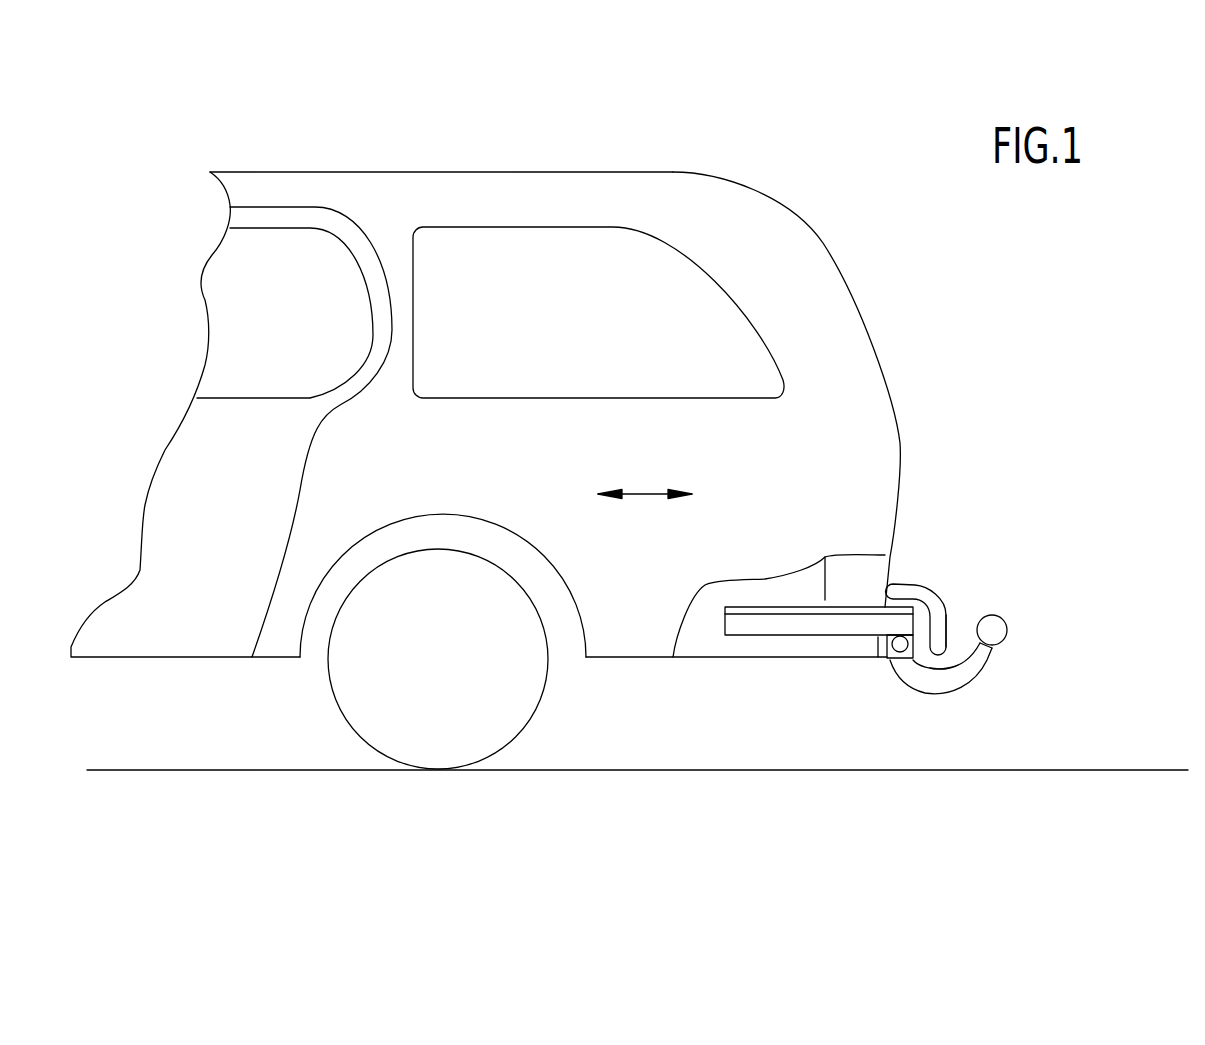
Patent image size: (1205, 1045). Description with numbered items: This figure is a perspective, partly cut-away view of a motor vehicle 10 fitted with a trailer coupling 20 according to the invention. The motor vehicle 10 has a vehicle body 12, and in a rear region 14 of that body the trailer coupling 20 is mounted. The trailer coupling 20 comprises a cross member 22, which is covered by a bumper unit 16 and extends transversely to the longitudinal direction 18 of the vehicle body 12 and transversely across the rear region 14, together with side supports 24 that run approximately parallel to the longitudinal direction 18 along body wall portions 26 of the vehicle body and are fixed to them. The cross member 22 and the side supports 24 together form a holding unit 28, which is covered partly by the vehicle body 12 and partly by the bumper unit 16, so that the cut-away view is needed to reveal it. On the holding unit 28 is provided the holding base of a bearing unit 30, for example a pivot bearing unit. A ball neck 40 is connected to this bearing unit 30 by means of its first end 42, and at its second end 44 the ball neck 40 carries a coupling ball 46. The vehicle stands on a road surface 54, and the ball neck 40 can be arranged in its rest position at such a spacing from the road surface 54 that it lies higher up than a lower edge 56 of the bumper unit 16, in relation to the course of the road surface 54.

The motor vehicle 10 is at (474, 407).
The vehicle body 12 is at (673, 193).
The rear region 14 is at (862, 372).
The bumper unit 16 is at (910, 580).
The longitudinal direction 18 is at (647, 494).
The trailer coupling 20 is at (845, 640).
The cross member 22 is at (938, 608).
The side supports 24 is at (783, 622).
The body wall portions 26 is at (734, 645).
The holding unit 28 is at (825, 590).
The bearing unit 30 is at (881, 676).
The ball neck 40 is at (995, 682).
The first end 42 is at (905, 663).
The second end 44 is at (1002, 638).
The coupling ball 46 is at (1007, 625).
The road surface 54 is at (1138, 770).
The lower edge 56 is at (947, 672).